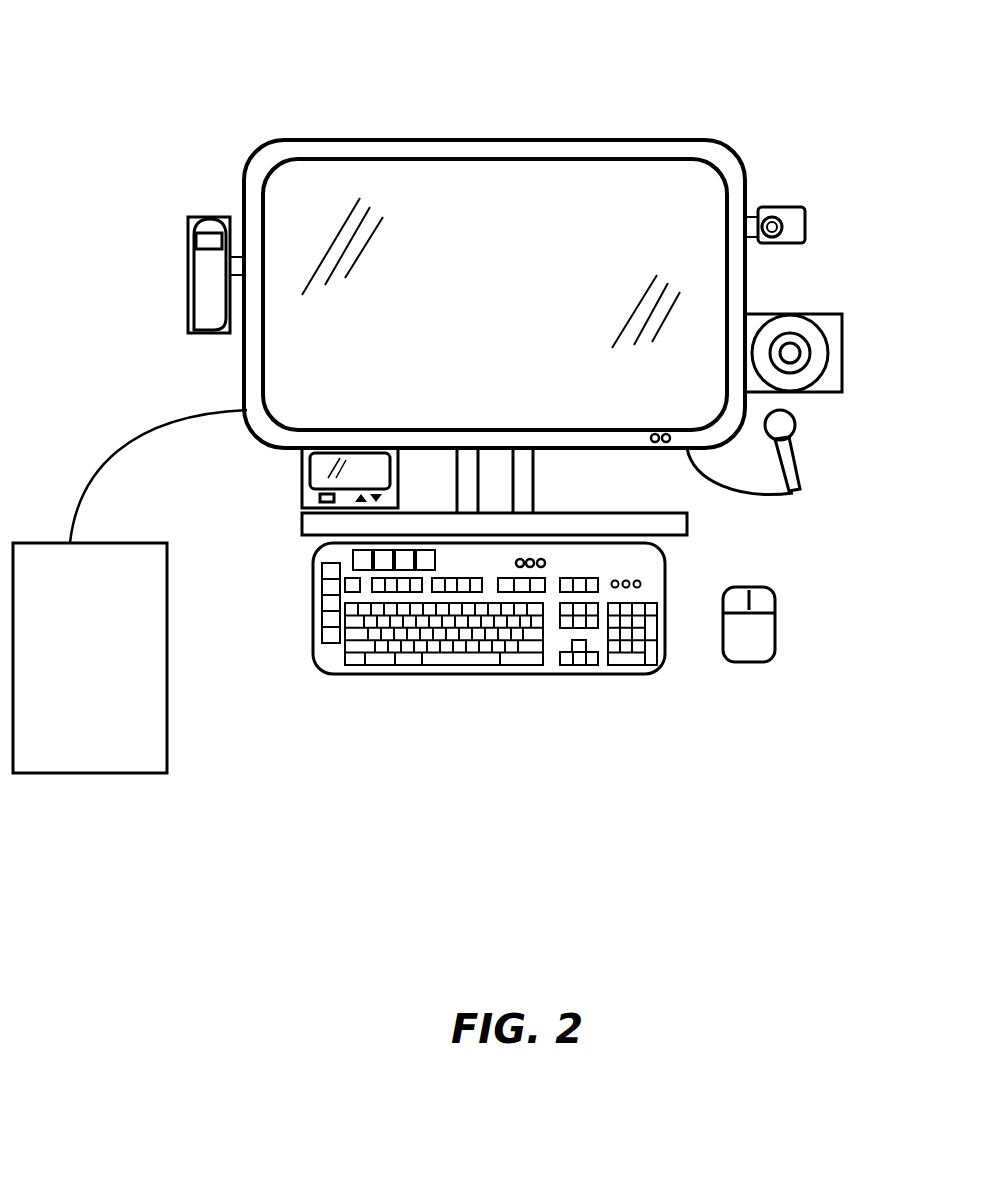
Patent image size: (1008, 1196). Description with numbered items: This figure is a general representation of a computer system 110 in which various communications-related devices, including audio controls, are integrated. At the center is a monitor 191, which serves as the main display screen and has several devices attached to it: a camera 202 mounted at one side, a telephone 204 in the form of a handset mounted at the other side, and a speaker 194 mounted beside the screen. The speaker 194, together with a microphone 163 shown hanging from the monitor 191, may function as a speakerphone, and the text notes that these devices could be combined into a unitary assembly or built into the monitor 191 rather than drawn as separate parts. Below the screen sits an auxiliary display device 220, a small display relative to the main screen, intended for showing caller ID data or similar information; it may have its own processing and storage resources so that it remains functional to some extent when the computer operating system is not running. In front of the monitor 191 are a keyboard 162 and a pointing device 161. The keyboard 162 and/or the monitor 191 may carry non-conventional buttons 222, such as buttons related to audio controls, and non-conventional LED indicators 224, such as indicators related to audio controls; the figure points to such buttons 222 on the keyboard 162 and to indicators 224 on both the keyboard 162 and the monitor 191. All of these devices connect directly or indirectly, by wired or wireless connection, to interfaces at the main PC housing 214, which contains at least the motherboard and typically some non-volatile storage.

The computer system 110 is at (180, 84).
The monitor 191 is at (236, 176).
The telephone 204 is at (202, 278).
The camera 202 is at (800, 218).
The speaker 194 is at (833, 372).
The microphone 163 is at (790, 455).
The auxiliary display device 220 is at (292, 471).
The LED indicators 224 is at (547, 559).
The keyboard 162 is at (607, 675).
The buttons 222 is at (350, 562).
The pointing device 161 is at (775, 645).
The main PC housing 214 is at (152, 738).